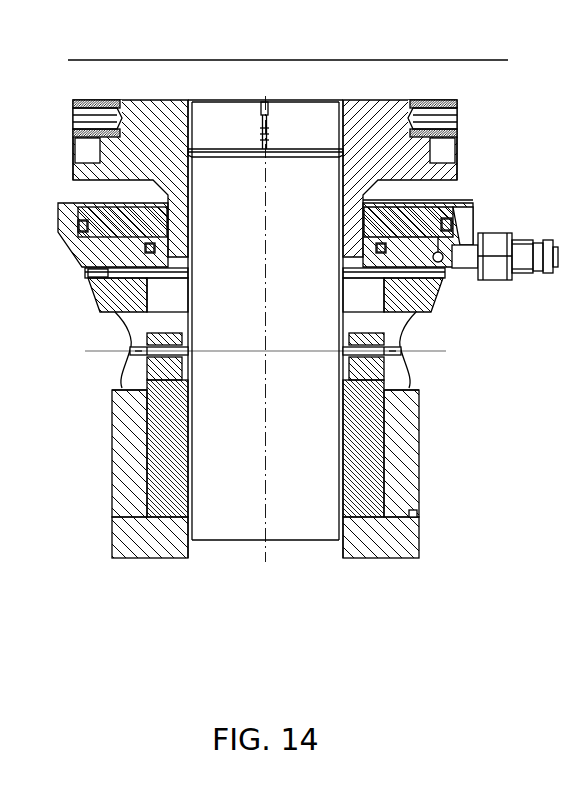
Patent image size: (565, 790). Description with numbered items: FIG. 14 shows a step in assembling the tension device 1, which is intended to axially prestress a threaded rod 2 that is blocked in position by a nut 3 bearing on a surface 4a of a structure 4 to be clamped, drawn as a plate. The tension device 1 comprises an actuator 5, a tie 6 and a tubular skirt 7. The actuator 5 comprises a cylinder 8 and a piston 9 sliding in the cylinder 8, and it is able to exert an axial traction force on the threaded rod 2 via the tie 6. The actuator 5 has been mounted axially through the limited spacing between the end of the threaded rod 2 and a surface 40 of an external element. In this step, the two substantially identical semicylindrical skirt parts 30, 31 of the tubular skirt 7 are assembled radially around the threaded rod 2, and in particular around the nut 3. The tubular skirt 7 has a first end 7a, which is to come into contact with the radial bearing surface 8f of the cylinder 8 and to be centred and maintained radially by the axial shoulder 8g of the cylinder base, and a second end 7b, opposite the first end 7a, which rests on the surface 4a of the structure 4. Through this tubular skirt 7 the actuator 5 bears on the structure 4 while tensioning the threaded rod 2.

The surface of an external element 40 is at (88, 58).
The tension device 1 is at (62, 131).
The tie 6 is at (458, 135).
The threaded rod 2 is at (311, 512).
The cylinder 8 is at (462, 203).
The piston 9 is at (425, 199).
The actuator 5 is at (474, 222).
The first end of the tubular skirt 7a is at (447, 276).
The axial shoulder 8g is at (88, 273).
The radial bearing surface 8f is at (100, 308).
The nut 3 is at (372, 383).
The skirt part 31 is at (115, 453).
The tubular skirt 7 is at (112, 488).
The skirt part 30 is at (415, 453).
The second end of the tubular skirt 7b is at (118, 520).
The structure to be clamped 4 is at (418, 540).
The surface of the structure 4a is at (414, 512).